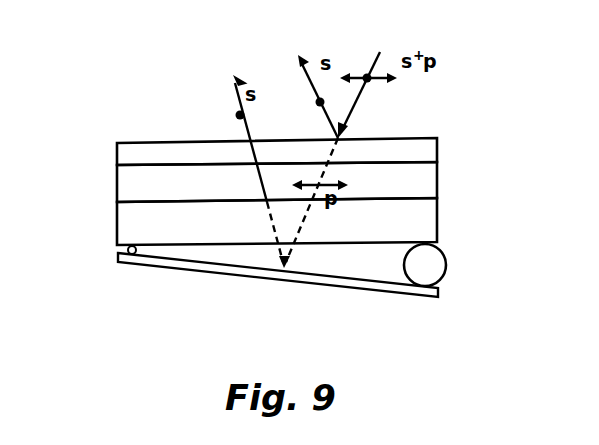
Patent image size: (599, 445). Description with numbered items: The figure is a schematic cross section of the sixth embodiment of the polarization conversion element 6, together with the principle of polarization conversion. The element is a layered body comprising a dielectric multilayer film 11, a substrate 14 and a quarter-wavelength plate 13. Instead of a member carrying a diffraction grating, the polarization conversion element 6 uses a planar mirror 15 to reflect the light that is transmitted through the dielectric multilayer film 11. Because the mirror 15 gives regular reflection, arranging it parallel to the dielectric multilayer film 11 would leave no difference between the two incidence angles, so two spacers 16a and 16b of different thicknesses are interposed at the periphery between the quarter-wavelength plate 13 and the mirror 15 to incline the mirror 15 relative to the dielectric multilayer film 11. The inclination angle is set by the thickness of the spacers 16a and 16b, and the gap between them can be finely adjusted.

The dielectric multilayer film 11 is at (425, 150).
The substrate 14 is at (423, 182).
The quarter-wavelength plate 13 is at (423, 218).
The planar mirror 15 is at (383, 292).
The spacer 16a is at (126, 251).
The spacer 16b is at (430, 265).
The polarization conversion element 6 is at (290, 350).